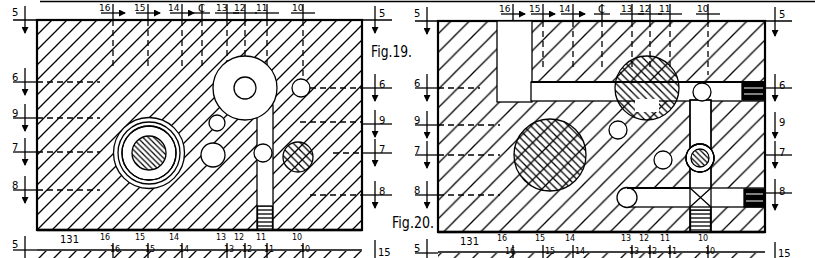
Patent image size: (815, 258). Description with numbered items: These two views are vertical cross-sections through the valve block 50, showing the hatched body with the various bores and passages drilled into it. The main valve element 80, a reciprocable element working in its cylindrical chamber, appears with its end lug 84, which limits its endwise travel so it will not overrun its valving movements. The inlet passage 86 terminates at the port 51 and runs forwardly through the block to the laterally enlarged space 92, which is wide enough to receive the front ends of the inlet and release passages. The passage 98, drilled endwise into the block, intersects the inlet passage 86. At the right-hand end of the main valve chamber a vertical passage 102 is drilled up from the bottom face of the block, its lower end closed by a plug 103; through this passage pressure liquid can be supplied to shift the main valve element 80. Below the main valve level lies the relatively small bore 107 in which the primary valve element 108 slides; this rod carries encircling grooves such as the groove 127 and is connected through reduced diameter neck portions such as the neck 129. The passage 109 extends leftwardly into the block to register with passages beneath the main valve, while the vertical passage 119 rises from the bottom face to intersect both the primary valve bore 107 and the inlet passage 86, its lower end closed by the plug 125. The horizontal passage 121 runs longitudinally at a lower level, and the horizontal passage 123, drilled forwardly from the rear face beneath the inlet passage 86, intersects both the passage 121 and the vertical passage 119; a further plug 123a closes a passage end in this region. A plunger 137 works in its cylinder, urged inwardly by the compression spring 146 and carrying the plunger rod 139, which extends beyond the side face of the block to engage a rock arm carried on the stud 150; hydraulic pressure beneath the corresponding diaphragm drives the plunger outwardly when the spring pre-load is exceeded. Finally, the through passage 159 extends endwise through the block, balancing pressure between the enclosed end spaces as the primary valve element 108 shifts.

In FIG. 19, the valve block 50 is at (199, 125).
In FIG. 20, the valve block 50 is at (601, 126).
In FIG. 20, the port 51 is at (762, 84).
In FIG. 19, the main valve element 80 is at (245, 88).
In FIG. 20, the main valve element 80 is at (647, 88).
In FIG. 19, the end lug 84 is at (239, 92).
In FIG. 20, the inlet passage 86 is at (760, 78).
In FIG. 20, the laterally enlarged space 92 is at (514, 61).
In FIG. 19, the passage 98 is at (307, 81).
In FIG. 20, the passage 98 is at (705, 84).
In FIG. 19, the vertical passage 102 is at (259, 189).
In FIG. 19, the plug 103 is at (275, 205).
In FIG. 20, the bore 107 is at (713, 163).
In FIG. 19, the primary valve element 108 is at (310, 150).
In FIG. 19, the passage 109 is at (262, 147).
In FIG. 20, the passage 109 is at (655, 161).
In FIG. 20, the vertical passage 119 is at (711, 118).
In FIG. 20, the horizontal passage 121 is at (621, 190).
In FIG. 20, the horizontal passage 123 is at (716, 211).
In FIG. 20, the plug 123a is at (760, 190).
In FIG. 20, the plug 125 is at (721, 236).
In FIG. 20, the encircling groove 127 is at (688, 149).
In FIG. 20, the reduced diameter neck portion 129 is at (713, 153).
In FIG. 19, the plunger 137 is at (127, 159).
In FIG. 20, the plunger 137 is at (528, 166).
In FIG. 19, the plunger rod 139 is at (140, 169).
In FIG. 19, the compression spring 146 is at (146, 122).
In FIG. 19, the stud 150 is at (209, 166).
In FIG. 19, the through passage 159 is at (213, 120).
In FIG. 20, the through passage 159 is at (613, 125).